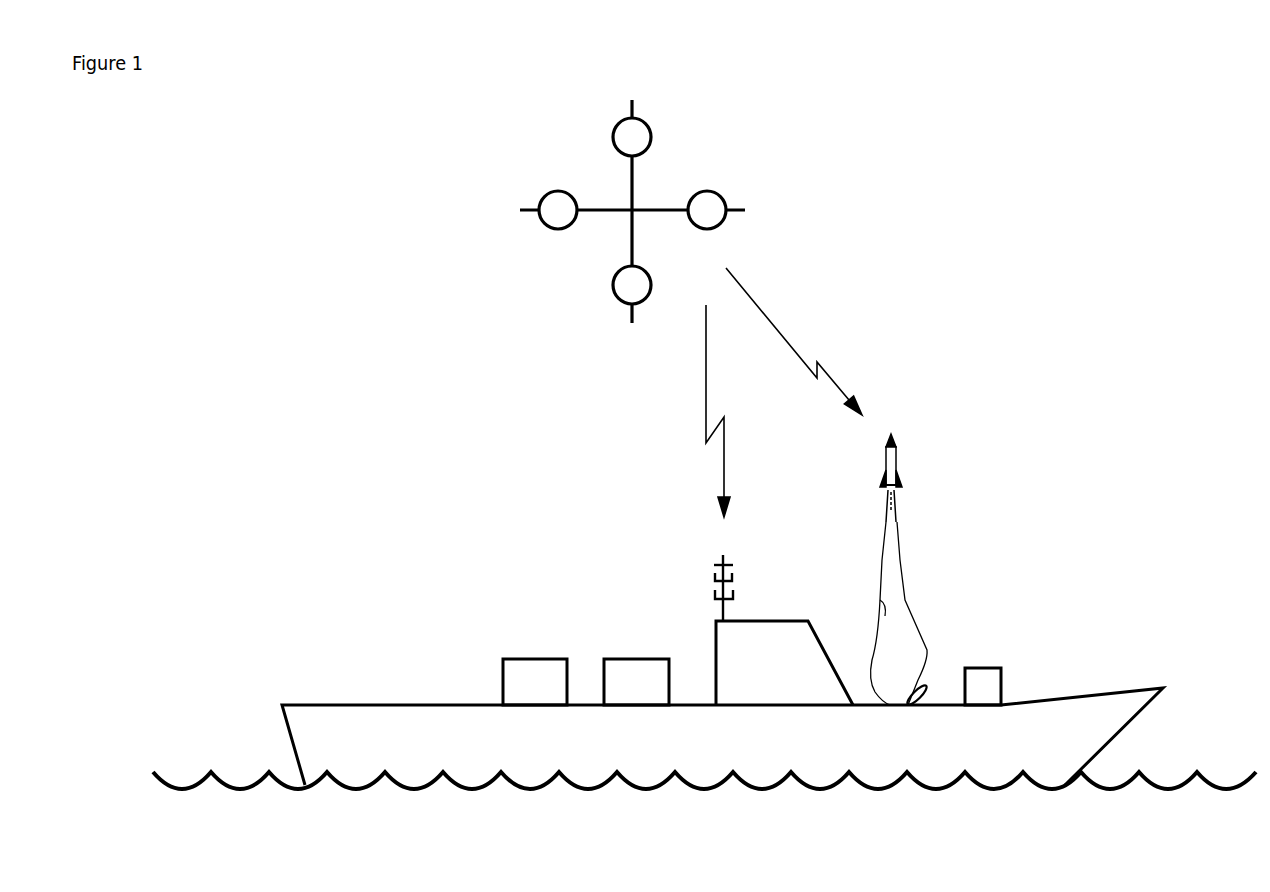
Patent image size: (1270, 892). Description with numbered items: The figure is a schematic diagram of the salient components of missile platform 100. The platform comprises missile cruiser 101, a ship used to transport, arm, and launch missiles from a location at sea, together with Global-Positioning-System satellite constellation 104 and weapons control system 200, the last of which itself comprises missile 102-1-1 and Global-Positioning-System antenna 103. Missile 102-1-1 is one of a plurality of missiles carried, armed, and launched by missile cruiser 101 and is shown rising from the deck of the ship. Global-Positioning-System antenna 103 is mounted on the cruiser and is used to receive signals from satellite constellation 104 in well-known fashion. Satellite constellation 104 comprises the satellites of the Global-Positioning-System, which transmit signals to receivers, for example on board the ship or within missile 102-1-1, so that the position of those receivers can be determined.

The missile platform 100 is at (448, 461).
The missile cruiser 101 is at (756, 703).
The missile 102-1-1 is at (943, 477).
The Global-Positioning-System antenna 103 is at (763, 586).
The Global-Positioning-System satellite constellation 104 is at (632, 211).
The weapons control system 200 is at (867, 547).